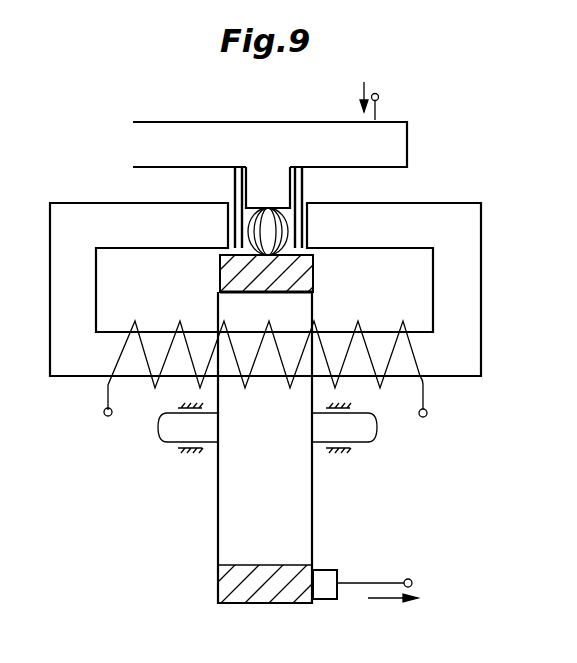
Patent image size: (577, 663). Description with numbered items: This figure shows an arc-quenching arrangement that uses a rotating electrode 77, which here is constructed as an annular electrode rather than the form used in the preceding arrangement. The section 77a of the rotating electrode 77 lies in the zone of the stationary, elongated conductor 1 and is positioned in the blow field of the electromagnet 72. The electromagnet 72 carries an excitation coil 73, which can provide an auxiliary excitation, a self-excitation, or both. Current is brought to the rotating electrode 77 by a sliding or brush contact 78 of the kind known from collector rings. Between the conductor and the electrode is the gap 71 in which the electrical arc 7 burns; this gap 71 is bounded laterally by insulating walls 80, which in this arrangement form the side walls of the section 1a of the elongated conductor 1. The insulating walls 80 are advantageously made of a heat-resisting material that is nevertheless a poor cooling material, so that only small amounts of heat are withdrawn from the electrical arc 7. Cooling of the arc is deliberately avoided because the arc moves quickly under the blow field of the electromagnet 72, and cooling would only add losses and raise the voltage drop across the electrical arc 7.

The stationary conductor 1 is at (331, 150).
The section of the elongated conductor 1a is at (264, 197).
The insulating walls 80 is at (238, 190).
The gap 71 is at (289, 217).
The electrical arc 7 is at (267, 240).
The section of the rotating electrode 77a is at (313, 277).
The electromagnet 72 is at (467, 300).
The excitation coil 73 is at (107, 416).
The rotating electrode 77 is at (216, 585).
The sliding or brush contact 78 is at (332, 580).